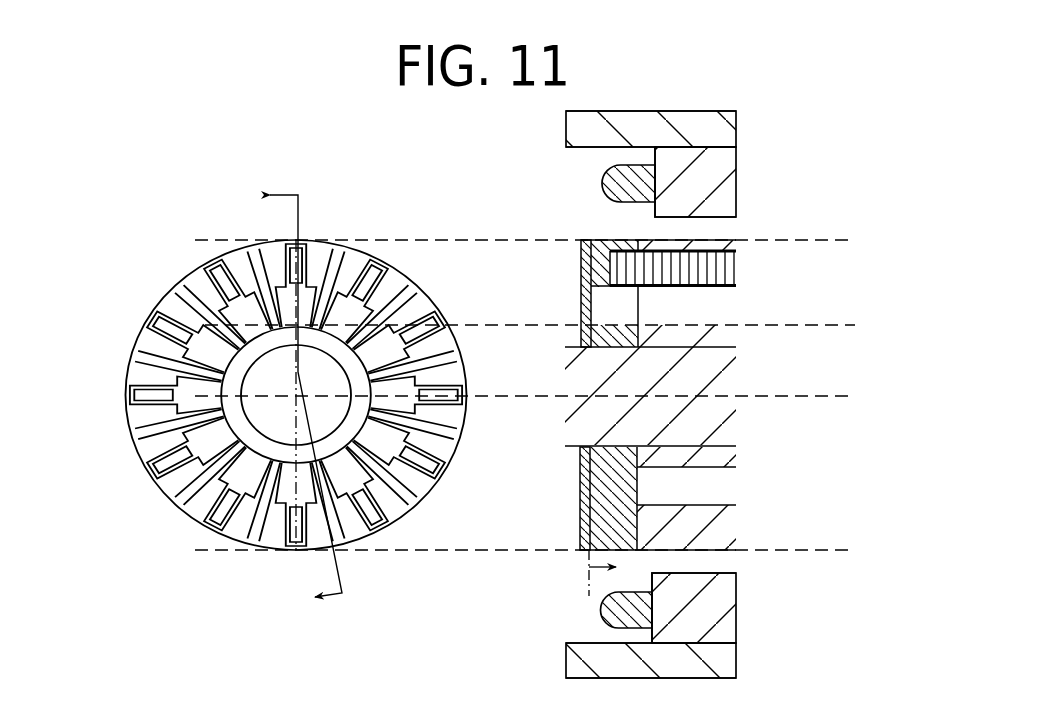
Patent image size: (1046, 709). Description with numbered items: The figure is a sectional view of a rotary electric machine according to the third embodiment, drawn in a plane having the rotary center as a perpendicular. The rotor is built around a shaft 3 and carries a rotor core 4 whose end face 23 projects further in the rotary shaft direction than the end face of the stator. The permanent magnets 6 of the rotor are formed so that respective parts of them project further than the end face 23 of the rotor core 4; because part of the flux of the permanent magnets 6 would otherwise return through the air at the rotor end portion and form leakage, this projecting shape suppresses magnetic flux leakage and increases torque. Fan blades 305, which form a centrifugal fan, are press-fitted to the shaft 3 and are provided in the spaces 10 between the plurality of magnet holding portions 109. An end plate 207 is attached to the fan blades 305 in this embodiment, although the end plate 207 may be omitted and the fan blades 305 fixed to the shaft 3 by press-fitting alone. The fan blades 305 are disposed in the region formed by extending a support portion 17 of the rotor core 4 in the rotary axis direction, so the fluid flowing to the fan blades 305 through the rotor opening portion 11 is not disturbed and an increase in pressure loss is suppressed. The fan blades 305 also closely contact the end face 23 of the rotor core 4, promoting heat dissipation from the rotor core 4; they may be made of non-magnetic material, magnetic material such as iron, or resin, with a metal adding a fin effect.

The space 10 is at (326, 258).
The support portion 17 is at (188, 432).
The fan blade 305 is at (183, 287).
The end face 23 is at (640, 242).
The magnet holding portion 109 is at (583, 275).
The end plate 207 is at (583, 527).
The permanent magnet 6 is at (717, 267).
The shaft 3 is at (717, 367).
The rotor opening portion 11 is at (708, 488).
The rotor core 4 is at (708, 533).